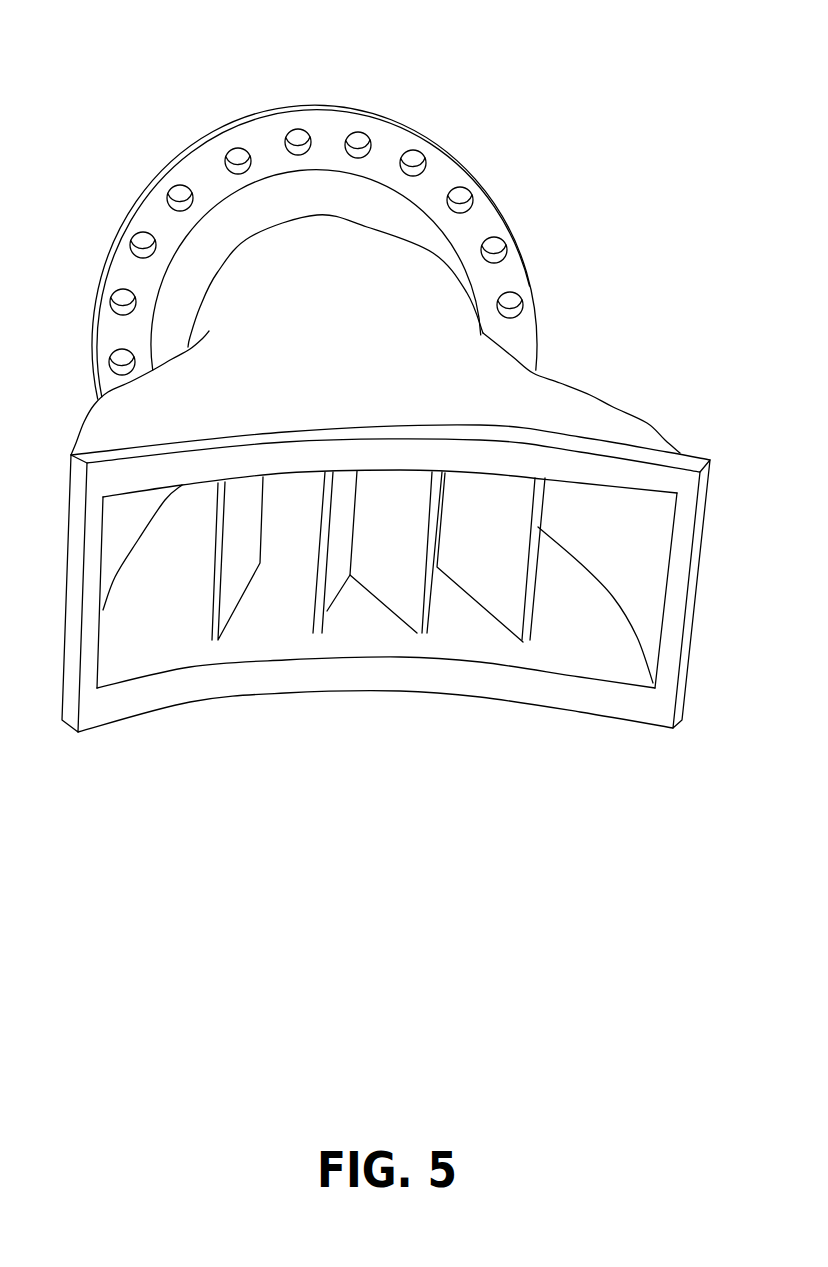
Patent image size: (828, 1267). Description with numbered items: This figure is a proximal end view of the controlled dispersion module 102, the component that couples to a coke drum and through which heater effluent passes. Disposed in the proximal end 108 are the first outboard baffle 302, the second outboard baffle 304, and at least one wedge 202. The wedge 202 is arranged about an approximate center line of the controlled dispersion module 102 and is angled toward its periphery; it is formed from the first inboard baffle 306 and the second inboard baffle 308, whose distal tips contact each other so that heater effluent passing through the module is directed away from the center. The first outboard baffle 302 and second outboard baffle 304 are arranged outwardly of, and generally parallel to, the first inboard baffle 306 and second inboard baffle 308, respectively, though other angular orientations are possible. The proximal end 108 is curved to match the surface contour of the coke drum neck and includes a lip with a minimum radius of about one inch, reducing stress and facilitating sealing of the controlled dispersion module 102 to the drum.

The controlled dispersion module 102 is at (370, 426).
The proximal end 108 is at (617, 703).
The wedge 202 is at (327, 608).
The first outboard baffle 302 is at (525, 643).
The second outboard baffle 304 is at (212, 641).
The first inboard baffle 306 is at (422, 635).
The second inboard baffle 308 is at (317, 635).